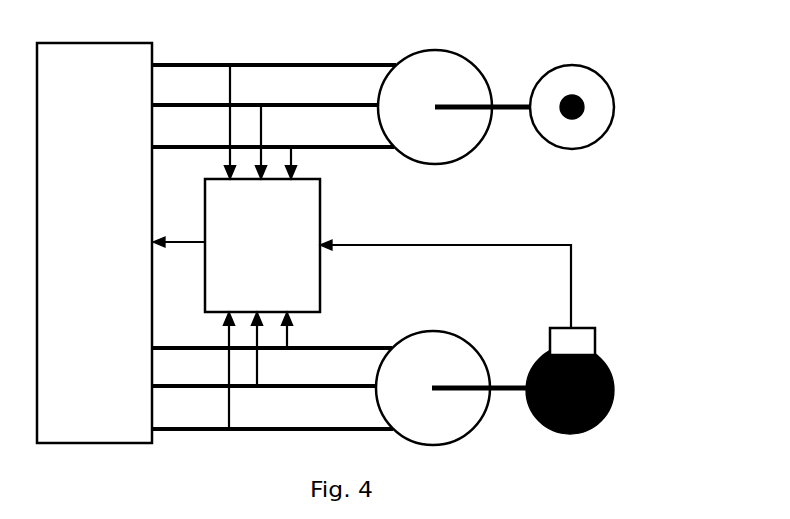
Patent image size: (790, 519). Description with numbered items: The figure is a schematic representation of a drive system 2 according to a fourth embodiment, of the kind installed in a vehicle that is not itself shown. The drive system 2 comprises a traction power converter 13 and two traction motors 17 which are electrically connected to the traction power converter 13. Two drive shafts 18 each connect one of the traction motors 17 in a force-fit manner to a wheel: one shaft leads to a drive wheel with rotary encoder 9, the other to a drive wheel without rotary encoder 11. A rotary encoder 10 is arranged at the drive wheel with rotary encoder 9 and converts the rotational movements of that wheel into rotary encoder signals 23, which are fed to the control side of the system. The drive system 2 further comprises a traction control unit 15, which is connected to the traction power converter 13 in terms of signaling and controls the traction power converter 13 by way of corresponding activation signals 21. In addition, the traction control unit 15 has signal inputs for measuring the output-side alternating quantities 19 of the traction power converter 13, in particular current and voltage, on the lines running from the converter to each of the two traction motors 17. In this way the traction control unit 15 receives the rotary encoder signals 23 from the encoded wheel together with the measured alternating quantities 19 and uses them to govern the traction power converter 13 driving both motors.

The drive system 2 is at (688, 274).
The drive wheel with rotary encoder 9 is at (593, 422).
The rotary encoder 10 is at (588, 340).
The drive wheel without rotary encoder 11 is at (588, 125).
The traction power converter 13 is at (94, 243).
The traction control unit 15 is at (262, 245).
The traction motor 17 is at (442, 70).
The drive shaft 18 is at (503, 102).
The output-side alternating quantities 19 is at (292, 155).
The activation signals 21 is at (195, 243).
The rotary encoder signals 23 is at (423, 243).